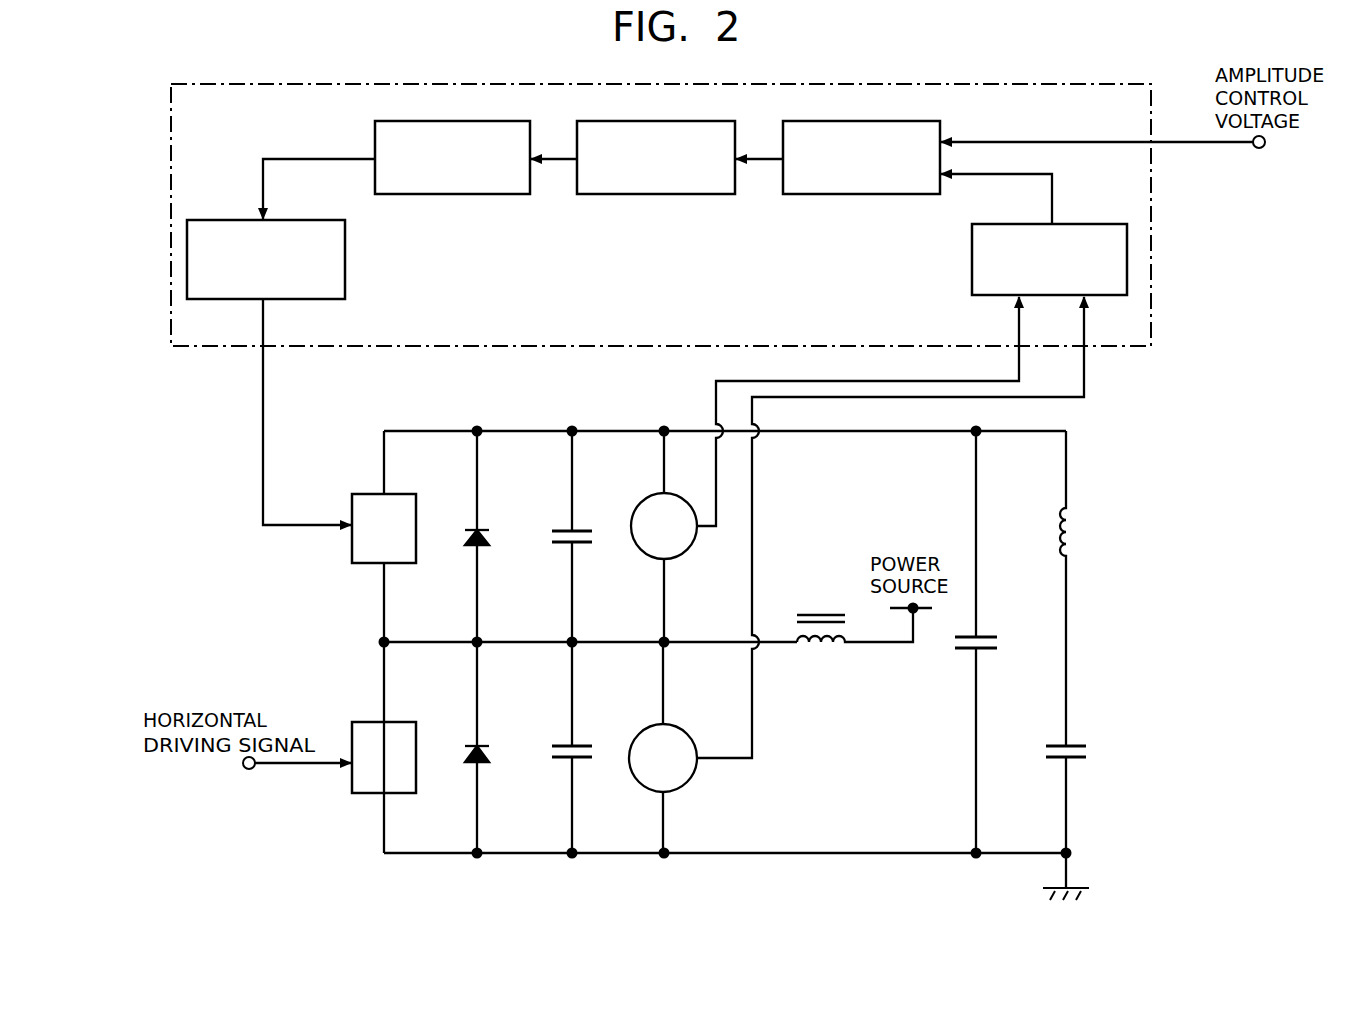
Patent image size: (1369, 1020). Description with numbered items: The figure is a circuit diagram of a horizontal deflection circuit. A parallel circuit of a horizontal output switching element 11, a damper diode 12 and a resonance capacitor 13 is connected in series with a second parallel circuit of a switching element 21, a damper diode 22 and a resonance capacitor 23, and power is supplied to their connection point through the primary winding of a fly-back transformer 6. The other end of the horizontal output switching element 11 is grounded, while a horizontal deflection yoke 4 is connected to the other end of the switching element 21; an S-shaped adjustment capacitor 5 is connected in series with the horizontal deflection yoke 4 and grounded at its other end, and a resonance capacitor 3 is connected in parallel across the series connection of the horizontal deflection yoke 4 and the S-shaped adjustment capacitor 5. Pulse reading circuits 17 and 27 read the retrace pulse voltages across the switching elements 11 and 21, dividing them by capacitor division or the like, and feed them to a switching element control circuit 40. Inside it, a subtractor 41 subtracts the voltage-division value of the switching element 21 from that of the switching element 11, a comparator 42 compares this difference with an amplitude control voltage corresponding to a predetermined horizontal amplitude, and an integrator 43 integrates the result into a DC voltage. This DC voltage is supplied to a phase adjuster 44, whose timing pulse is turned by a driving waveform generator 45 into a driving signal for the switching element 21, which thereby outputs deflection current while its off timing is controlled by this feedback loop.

The switching element control circuit 40 is at (1153, 283).
The subtractor 41 is at (972, 281).
The comparator 42 is at (845, 195).
The integrator 43 is at (645, 195).
The phase adjuster 44 is at (465, 195).
The driving waveform generator 45 is at (345, 270).
The switching element 21 is at (352, 548).
The damper diode 22 is at (472, 530).
The resonance capacitor 23 is at (563, 531).
The pulse reading circuit 27 is at (680, 560).
The horizontal output switching element 11 is at (350, 774).
The damper diode 12 is at (473, 746).
The resonance capacitor 13 is at (563, 746).
The pulse reading circuit 17 is at (688, 782).
The fly-back transformer 6 is at (825, 653).
The resonance capacitor 3 is at (985, 650).
The horizontal deflection yoke 4 is at (1082, 541).
The S-shaped adjustment capacitor 5 is at (1088, 752).